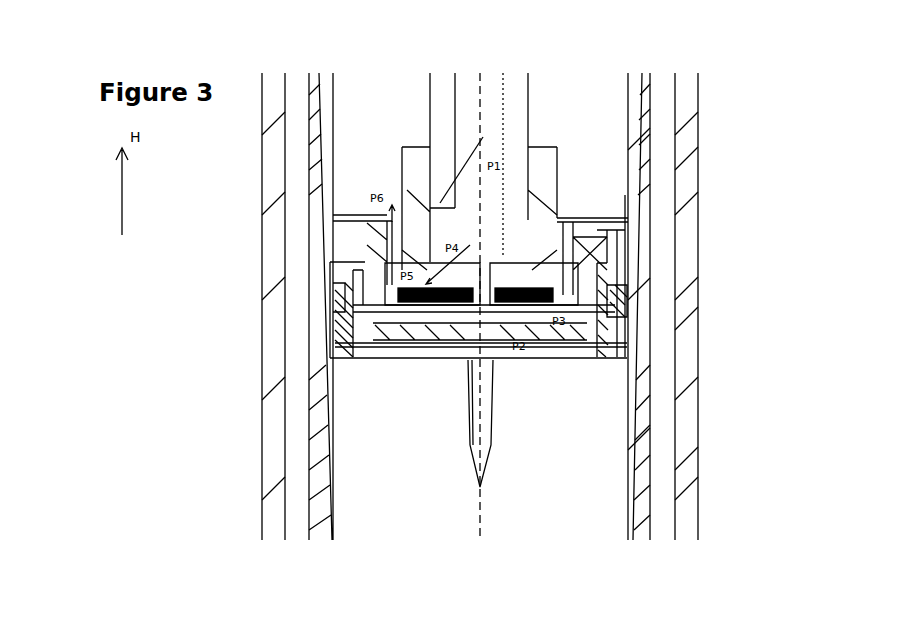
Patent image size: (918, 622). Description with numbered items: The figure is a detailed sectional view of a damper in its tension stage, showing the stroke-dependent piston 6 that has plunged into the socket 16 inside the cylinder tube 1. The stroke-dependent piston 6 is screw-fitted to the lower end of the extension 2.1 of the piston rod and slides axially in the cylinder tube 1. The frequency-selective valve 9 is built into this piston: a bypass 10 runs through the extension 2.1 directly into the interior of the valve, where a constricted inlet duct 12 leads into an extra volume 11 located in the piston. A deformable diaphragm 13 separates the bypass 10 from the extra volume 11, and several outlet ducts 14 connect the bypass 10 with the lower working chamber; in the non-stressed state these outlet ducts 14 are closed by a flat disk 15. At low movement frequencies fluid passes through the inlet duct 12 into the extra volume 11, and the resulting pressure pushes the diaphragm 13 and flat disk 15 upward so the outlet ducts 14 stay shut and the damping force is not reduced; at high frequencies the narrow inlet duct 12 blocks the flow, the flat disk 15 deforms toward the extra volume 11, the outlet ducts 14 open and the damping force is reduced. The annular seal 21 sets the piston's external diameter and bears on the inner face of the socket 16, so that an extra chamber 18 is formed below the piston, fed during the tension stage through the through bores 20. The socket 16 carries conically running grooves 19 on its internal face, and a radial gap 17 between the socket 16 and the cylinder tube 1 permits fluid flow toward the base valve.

The cylinder tube 1 is at (683, 77).
The extension of the piston rod 2.1 is at (440, 95).
The stroke-dependent piston 6 is at (350, 247).
The frequency-selective valve 9 is at (600, 385).
The bypass 10 is at (513, 75).
The extra volume 11 is at (468, 358).
The inlet duct 12 is at (500, 260).
The diaphragm 13 is at (573, 263).
The outlet duct 14 is at (330, 215).
The flat disk 15 is at (337, 308).
The socket 16 is at (620, 445).
The gap 17 is at (300, 90).
The extra chamber 18 is at (600, 490).
The groove 19 is at (300, 120).
The through bore 20 is at (337, 327).
The annular seal 21 is at (620, 295).